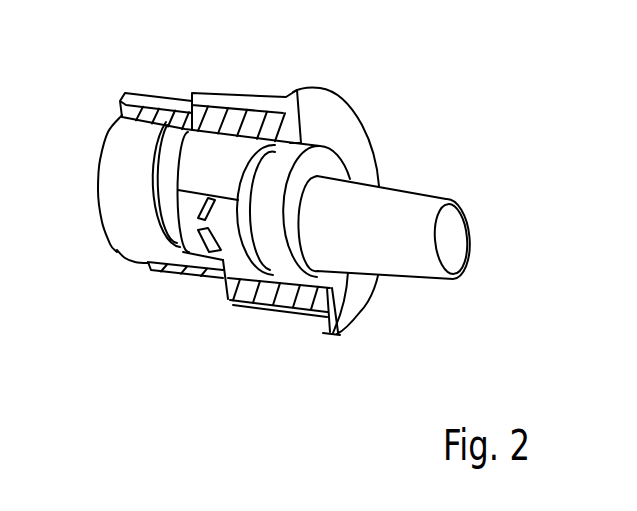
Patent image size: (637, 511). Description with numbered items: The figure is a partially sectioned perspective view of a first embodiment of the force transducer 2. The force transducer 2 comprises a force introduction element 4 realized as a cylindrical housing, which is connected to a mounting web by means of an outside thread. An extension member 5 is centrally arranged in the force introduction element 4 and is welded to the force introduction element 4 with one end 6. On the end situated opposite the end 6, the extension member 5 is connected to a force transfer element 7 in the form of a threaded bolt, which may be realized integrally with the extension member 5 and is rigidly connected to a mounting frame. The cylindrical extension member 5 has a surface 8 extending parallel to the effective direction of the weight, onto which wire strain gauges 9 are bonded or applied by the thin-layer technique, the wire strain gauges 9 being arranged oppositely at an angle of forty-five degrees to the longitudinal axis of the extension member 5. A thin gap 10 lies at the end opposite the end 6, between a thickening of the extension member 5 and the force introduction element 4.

The force transducer 2 is at (426, 97).
The force introduction element 4 is at (237, 100).
The extension member 5 is at (115, 182).
The end 6 is at (122, 116).
The force transfer element 7 is at (396, 253).
The surface 8 is at (191, 237).
The wire strain gauges 9 is at (209, 229).
The thin gap 10 is at (316, 140).